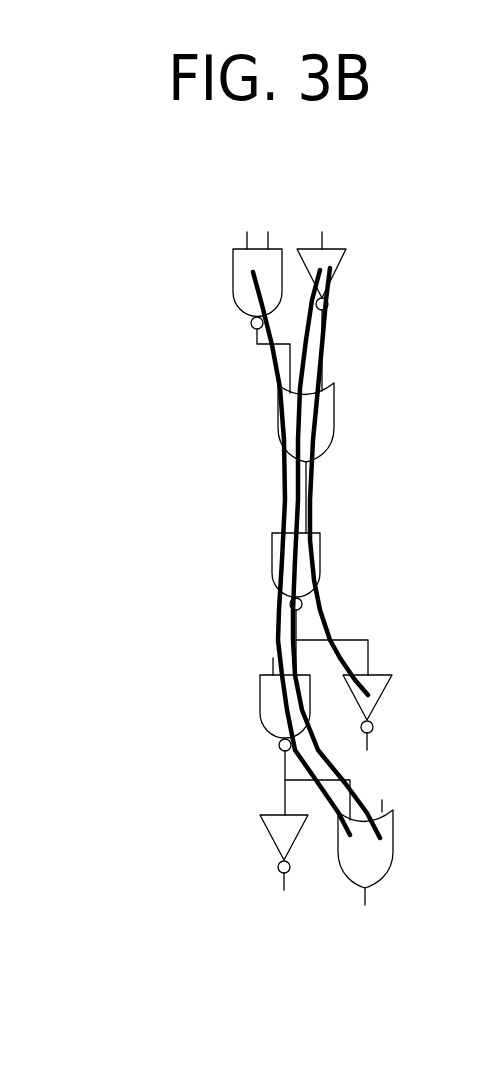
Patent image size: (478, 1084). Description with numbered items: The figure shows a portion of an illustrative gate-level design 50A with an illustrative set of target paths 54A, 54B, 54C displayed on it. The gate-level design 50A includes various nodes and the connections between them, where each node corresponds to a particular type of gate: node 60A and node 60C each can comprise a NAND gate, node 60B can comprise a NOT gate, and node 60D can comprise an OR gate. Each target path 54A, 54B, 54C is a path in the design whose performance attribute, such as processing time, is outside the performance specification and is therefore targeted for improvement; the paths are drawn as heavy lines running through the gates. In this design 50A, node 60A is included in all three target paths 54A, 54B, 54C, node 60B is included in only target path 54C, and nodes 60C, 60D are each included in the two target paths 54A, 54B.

The gate-level design 50A is at (168, 232).
The target path 54A is at (283, 500).
The target path 54B is at (358, 803).
The target path 54C is at (327, 343).
The node 60A is at (320, 568).
The node 60B is at (388, 688).
The node 60C is at (258, 710).
The node 60D is at (425, 836).